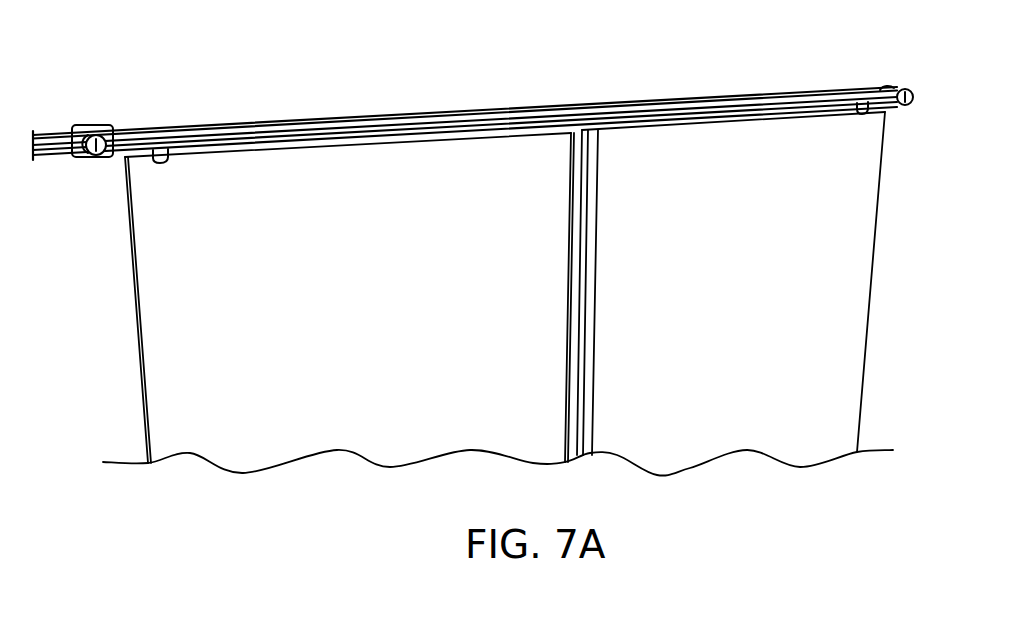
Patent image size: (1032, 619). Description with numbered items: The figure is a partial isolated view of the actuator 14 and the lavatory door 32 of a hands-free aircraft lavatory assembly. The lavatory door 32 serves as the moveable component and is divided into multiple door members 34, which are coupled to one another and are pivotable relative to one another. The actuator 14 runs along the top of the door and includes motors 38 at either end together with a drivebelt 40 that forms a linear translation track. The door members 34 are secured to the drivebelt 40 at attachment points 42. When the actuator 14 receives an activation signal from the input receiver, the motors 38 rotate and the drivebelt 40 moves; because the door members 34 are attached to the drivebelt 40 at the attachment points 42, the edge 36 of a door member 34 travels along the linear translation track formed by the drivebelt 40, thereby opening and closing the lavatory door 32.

The actuator 14 is at (130, 101).
The lavatory door 32 is at (122, 320).
The door members 34 is at (382, 196).
The edge 36 is at (138, 403).
The motor 38 is at (96, 137).
The drivebelt 40 is at (297, 121).
The attachment point 42 is at (160, 150).